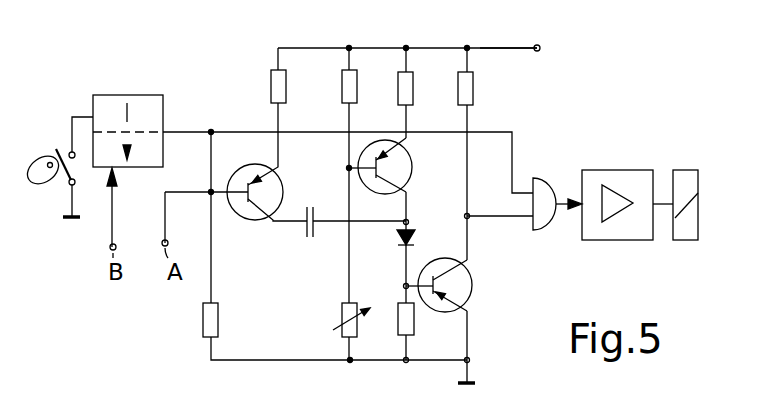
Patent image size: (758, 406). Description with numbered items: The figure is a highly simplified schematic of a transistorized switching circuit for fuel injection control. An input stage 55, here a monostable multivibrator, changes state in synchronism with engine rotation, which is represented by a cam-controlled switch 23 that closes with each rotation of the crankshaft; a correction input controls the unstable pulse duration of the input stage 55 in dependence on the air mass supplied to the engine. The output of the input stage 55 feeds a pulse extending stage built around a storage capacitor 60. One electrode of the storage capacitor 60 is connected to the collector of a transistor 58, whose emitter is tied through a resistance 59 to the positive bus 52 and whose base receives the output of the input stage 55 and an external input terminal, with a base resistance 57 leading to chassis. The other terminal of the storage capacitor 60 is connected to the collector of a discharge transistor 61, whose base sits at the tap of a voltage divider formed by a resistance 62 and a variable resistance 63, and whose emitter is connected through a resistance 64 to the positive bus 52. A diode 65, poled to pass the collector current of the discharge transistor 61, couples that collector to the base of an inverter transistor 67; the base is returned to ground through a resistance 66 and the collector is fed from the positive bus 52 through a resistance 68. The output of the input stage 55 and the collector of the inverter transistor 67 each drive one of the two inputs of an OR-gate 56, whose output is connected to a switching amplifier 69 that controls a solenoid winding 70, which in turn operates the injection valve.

The switch 23 is at (55, 150).
The positive bus 52 is at (492, 47).
The input stage 55 is at (120, 95).
The OR-gate 56 is at (533, 178).
The base resistance 57 is at (218, 320).
The transistor 58 is at (253, 222).
The resistance 59 is at (287, 88).
The storage capacitor 60 is at (318, 210).
The discharge transistor 61 is at (412, 170).
The resistance 62 is at (356, 90).
The variable resistance 63 is at (341, 320).
The resistance 64 is at (413, 88).
The diode 65 is at (417, 237).
The resistance 66 is at (415, 318).
The inverter transistor 67 is at (472, 285).
The resistance 68 is at (473, 88).
The switching amplifier 69 is at (595, 238).
The solenoid winding 70 is at (683, 240).